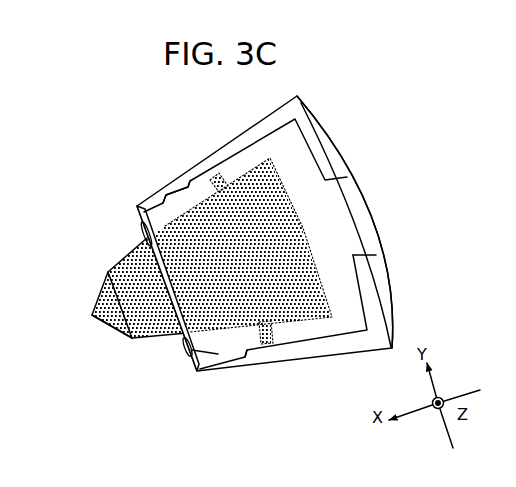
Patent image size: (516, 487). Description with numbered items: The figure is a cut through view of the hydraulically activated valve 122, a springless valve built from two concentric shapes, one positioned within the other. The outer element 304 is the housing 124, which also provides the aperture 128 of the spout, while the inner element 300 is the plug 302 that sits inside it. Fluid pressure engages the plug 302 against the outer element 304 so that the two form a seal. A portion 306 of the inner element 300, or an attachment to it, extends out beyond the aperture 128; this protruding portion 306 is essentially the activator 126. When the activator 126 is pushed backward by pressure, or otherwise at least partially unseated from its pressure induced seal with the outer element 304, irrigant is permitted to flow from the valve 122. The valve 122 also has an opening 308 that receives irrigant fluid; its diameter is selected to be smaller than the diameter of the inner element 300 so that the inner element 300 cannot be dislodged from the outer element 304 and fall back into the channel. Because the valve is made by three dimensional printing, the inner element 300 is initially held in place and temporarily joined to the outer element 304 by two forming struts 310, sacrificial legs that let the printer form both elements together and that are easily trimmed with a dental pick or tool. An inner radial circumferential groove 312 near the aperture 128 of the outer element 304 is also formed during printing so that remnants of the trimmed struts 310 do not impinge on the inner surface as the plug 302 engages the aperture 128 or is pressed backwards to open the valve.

The hydraulically activated valve 122 is at (106, 141).
The housing 124 is at (213, 218).
The outer element 304 is at (228, 148).
The activator 126 is at (98, 320).
The aperture 128 is at (189, 354).
The inner element 300 is at (101, 288).
The plug 302 is at (109, 273).
The portion 306 is at (143, 240).
The opening 308 is at (368, 199).
The forming strut 310 is at (215, 183).
The inner radial circumferential groove 312 is at (164, 200).